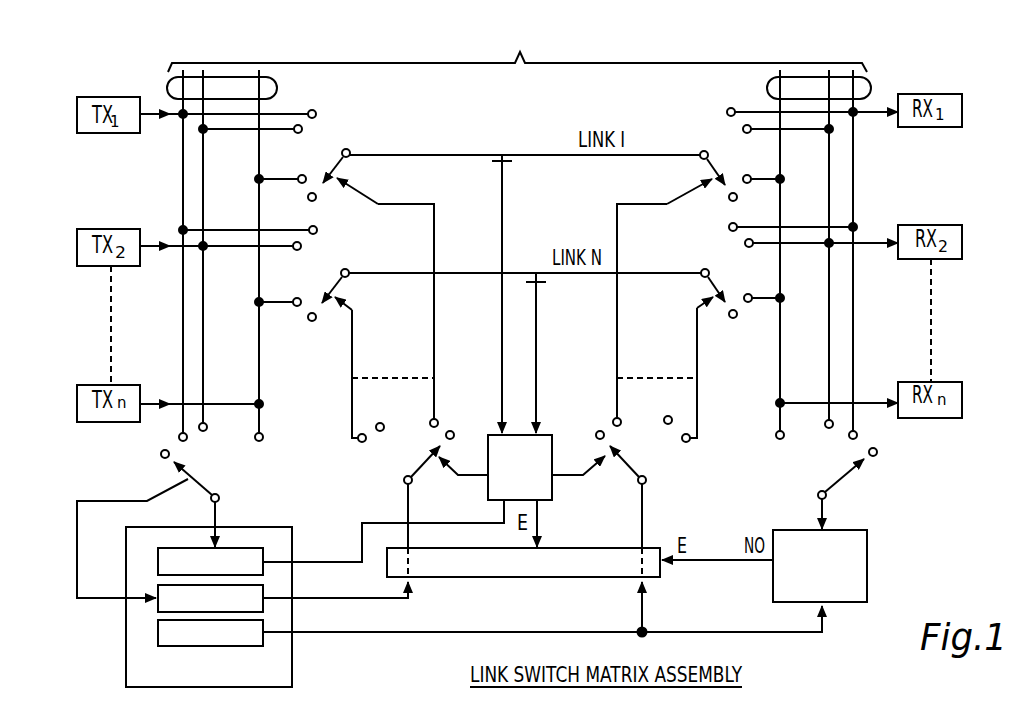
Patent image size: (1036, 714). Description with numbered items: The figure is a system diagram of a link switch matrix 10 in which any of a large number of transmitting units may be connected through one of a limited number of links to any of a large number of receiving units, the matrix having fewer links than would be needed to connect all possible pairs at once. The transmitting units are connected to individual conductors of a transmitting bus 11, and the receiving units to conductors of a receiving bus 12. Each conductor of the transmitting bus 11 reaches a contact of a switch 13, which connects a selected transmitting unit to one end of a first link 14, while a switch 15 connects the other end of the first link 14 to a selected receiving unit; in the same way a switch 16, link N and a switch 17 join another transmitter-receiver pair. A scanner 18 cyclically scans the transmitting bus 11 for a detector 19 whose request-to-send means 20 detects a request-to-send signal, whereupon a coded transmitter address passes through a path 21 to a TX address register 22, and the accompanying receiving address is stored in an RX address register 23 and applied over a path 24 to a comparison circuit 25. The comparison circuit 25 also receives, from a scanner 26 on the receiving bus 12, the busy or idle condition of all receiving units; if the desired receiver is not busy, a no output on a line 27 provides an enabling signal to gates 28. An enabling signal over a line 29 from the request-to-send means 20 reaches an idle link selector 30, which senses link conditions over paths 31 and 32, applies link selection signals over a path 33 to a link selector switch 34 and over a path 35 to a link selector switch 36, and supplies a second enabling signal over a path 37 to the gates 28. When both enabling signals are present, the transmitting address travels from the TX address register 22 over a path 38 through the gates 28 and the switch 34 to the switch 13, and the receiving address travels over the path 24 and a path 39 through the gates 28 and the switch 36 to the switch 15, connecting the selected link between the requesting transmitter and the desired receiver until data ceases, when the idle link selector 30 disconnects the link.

The link switch matrix 10 is at (517, 47).
The transmitting bus 11 is at (279, 88).
The receiving bus 12 is at (767, 88).
The switch 13 is at (324, 164).
The first link 14 is at (478, 157).
The switch 15 is at (744, 166).
The switch 16 is at (320, 290).
The switch 17 is at (746, 285).
The scanner 18 is at (244, 493).
The detector 19 is at (247, 527).
The request-to-send detecting means 20 is at (158, 562).
The path 21 is at (131, 493).
The TX address register 22 is at (158, 591).
The RX address register 23 is at (158, 633).
The path 24 is at (330, 632).
The comparison circuit 25 is at (868, 552).
The scanner 26 is at (816, 492).
The line 27 is at (732, 560).
The gates 28 is at (575, 577).
The line 29 is at (318, 562).
The idle link selector 30 is at (549, 436).
The path 31 is at (502, 361).
The path 32 is at (538, 361).
The path 33 is at (472, 467).
The link selector switch 34 is at (414, 459).
The path 35 is at (575, 467).
The link selector switch 36 is at (663, 458).
The path 37 is at (541, 520).
The path 38 is at (323, 598).
The path 39 is at (643, 611).